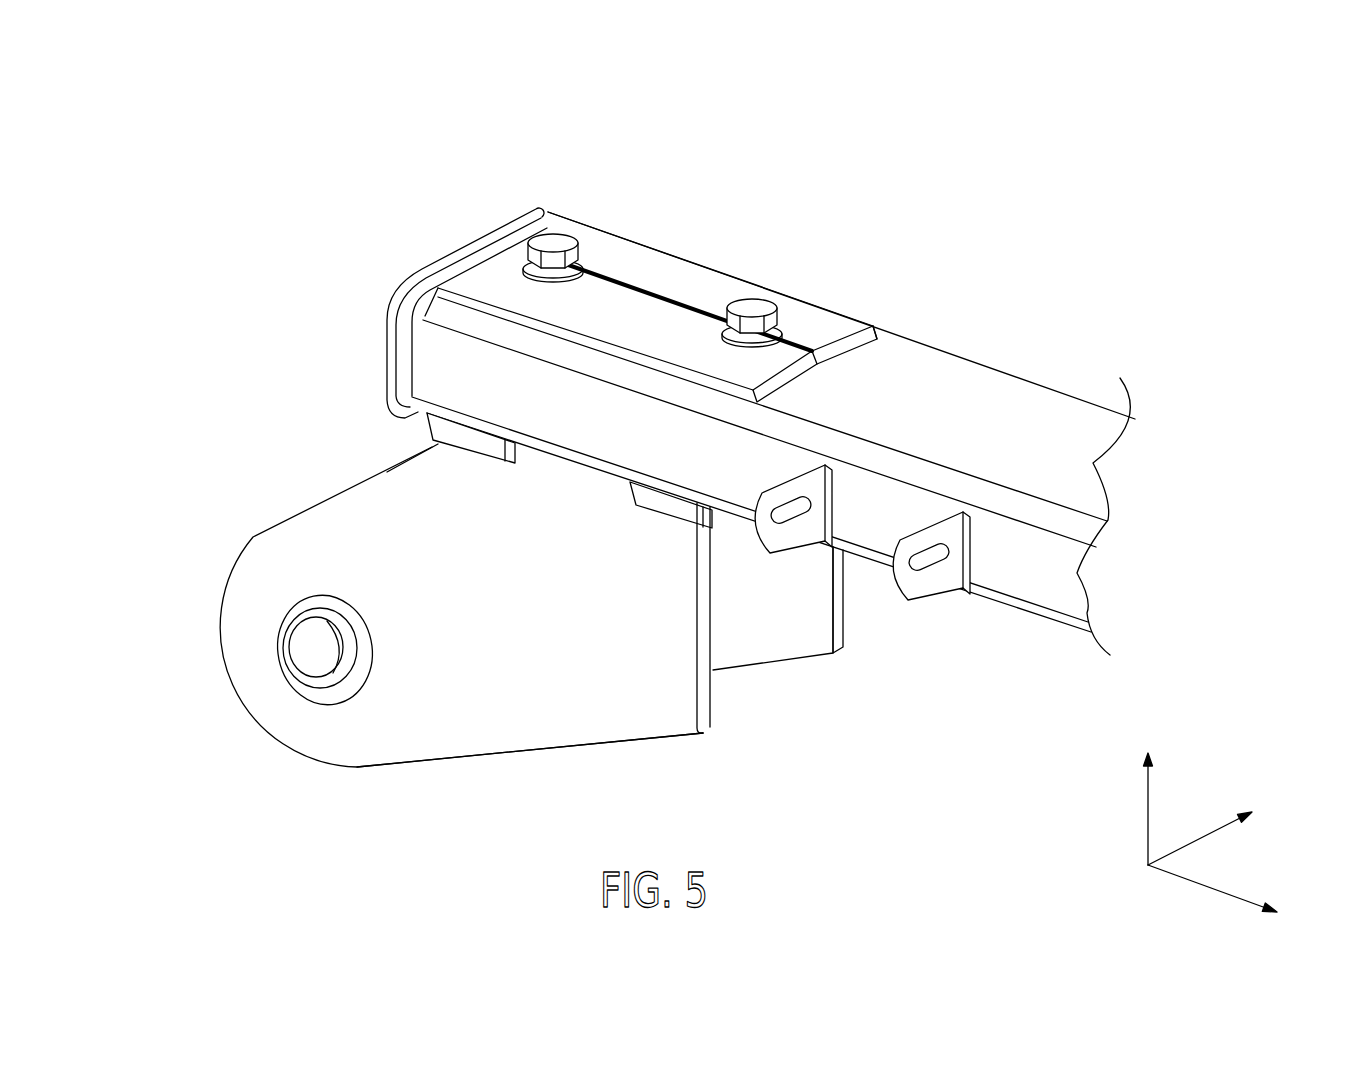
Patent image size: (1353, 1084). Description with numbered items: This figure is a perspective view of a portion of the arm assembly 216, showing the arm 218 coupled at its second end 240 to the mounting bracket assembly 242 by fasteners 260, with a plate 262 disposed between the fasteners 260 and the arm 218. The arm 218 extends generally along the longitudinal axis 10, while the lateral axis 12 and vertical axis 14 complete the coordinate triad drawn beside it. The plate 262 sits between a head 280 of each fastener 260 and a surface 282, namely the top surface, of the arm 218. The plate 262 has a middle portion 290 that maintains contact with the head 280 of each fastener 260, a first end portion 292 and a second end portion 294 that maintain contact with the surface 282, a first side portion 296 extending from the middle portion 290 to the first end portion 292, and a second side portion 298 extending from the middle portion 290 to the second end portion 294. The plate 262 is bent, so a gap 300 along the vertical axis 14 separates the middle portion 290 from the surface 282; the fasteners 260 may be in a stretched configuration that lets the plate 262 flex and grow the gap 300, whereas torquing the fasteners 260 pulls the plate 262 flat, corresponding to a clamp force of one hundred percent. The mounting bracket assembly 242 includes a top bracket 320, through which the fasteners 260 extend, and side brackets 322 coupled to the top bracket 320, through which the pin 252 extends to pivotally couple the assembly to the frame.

The longitudinal axis 10 is at (1207, 892).
The lateral axis 12 is at (1193, 847).
The vertical axis 14 is at (1148, 813).
The arm assembly 216 is at (1134, 152).
The arm 218 is at (1087, 393).
The second end 240 is at (676, 248).
The mounting bracket assembly 242 is at (415, 614).
The pin 252 is at (282, 668).
The fasteners 260 is at (659, 217).
The plate 262 is at (665, 249).
The head 280 is at (553, 237).
The surface 282 is at (953, 375).
The middle portion 290 is at (593, 273).
The first end portion 292 is at (843, 312).
The second end portion 294 is at (455, 300).
The first side portion 296 is at (643, 273).
The second side portion 298 is at (490, 288).
The gap 300 is at (828, 384).
The top bracket 320 is at (727, 528).
The side brackets 322 is at (466, 758).